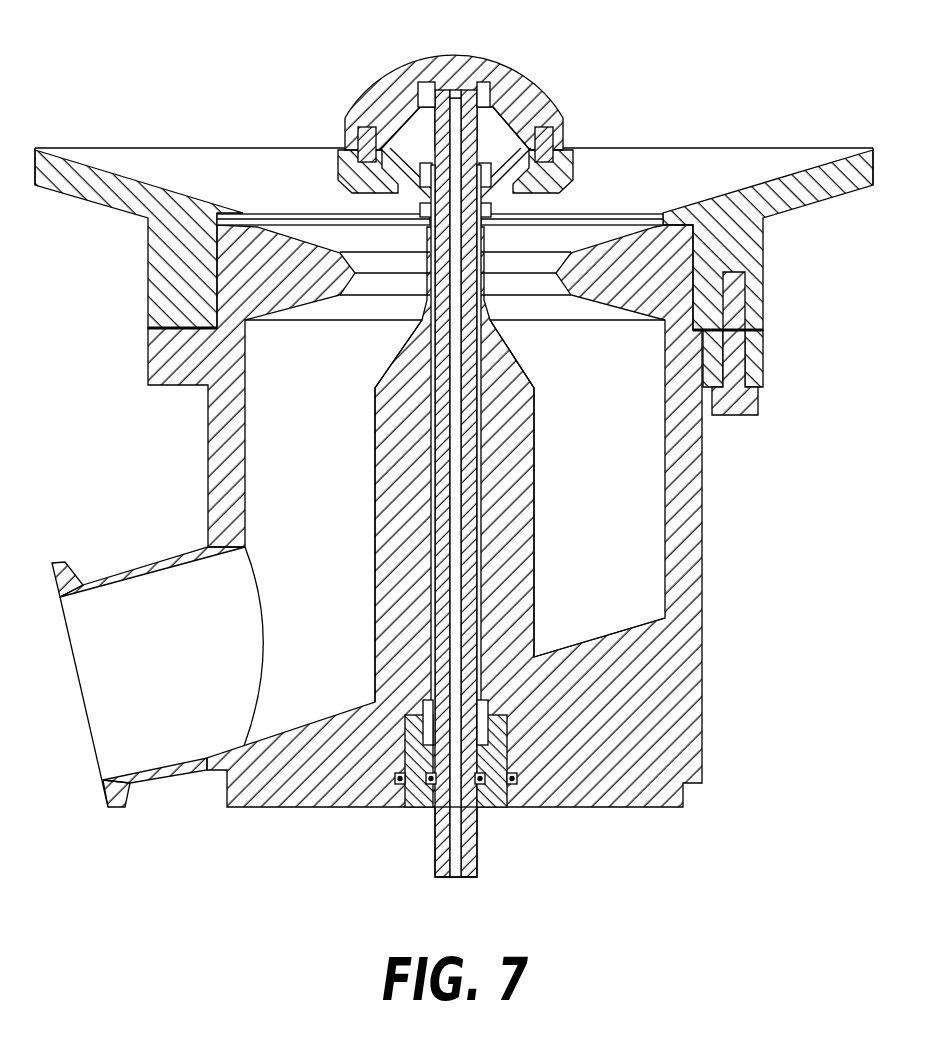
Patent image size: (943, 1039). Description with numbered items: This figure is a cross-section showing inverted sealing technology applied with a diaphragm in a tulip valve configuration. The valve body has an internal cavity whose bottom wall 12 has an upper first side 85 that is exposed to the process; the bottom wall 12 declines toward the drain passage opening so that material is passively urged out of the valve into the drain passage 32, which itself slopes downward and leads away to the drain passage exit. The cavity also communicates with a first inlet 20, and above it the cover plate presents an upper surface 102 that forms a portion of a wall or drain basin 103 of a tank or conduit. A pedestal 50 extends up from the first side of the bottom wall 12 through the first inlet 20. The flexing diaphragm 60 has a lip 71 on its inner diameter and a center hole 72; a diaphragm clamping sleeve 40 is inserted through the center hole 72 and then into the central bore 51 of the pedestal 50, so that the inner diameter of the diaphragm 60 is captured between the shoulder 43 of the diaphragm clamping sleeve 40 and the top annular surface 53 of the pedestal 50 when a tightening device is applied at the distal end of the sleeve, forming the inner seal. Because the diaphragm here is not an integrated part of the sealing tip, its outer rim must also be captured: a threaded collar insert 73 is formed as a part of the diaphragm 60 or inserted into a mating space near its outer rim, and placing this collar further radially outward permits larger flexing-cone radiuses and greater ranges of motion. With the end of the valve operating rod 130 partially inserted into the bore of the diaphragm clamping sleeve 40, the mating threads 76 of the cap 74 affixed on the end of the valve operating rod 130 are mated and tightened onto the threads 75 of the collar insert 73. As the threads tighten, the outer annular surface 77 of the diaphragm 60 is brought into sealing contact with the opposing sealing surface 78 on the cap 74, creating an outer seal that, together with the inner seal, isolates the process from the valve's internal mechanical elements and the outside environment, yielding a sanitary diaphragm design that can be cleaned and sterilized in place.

The bottom wall 12 is at (690, 657).
The first inlet 20 is at (248, 212).
The drain passage 32 is at (161, 674).
The diaphragm clamping sleeve 40 is at (478, 422).
The shoulder 43 is at (481, 165).
The pedestal 50 is at (534, 472).
The central bore 51 is at (468, 545).
The top annular surface 53 is at (430, 216).
The flexing diaphragm 60 is at (432, 214).
The lip 71 is at (362, 193).
The center hole 72 is at (424, 250).
The threaded collar insert 73 is at (348, 153).
The cap 74 is at (397, 77).
The threads 75 is at (352, 130).
The mating threads 76 is at (558, 148).
The outer annular surface 77 is at (382, 80).
The sealing surface 78 is at (567, 160).
The upper first side 85 is at (618, 615).
The upper surface 102 is at (693, 162).
The drain basin 103 is at (762, 181).
The valve operating rod 130 is at (474, 832).